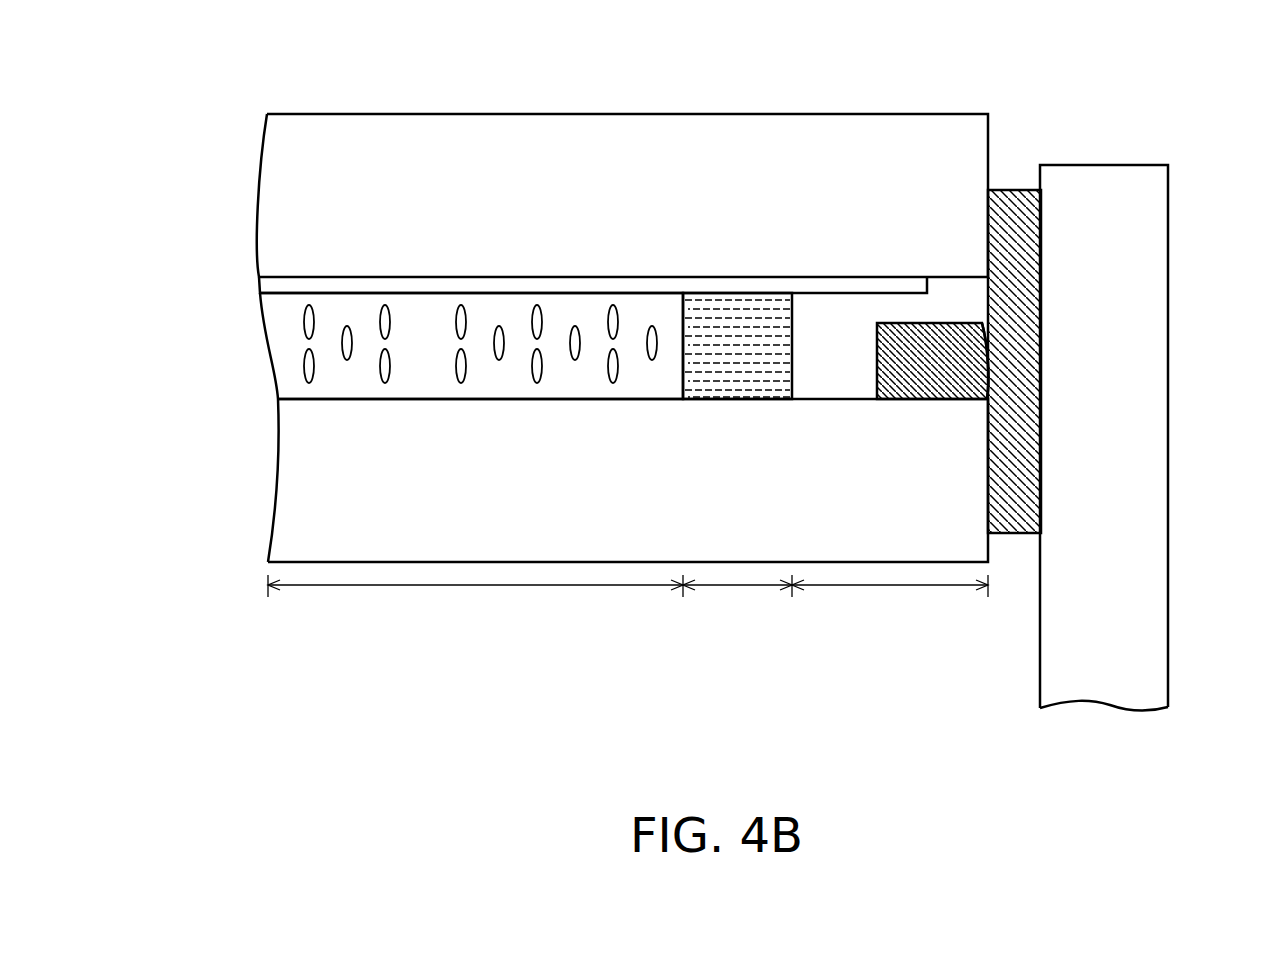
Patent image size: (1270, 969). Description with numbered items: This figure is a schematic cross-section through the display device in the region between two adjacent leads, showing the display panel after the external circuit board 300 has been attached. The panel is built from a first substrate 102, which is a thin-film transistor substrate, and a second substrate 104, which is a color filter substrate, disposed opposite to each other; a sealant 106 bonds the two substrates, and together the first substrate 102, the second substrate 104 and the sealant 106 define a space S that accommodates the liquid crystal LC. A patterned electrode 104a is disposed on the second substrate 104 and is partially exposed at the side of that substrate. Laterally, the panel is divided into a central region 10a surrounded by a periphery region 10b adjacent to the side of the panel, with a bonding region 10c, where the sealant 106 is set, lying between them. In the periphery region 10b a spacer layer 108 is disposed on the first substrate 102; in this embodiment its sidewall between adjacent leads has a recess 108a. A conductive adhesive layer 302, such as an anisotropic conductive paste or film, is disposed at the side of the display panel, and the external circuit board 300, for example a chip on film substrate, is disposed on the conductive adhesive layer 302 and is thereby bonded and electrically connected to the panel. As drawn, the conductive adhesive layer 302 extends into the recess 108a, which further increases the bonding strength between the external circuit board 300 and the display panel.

The second substrate 104 is at (268, 197).
The patterned electrode 104a is at (266, 285).
The liquid crystal LC is at (305, 366).
The space S is at (435, 361).
The first substrate 102 is at (290, 482).
The sealant 106 is at (741, 308).
The spacer layer 108 is at (948, 358).
The recess 108a is at (985, 358).
The conductive adhesive layer 302 is at (1030, 530).
The external circuit board 300 is at (1124, 671).
The central region 10a is at (475, 600).
The periphery region 10b is at (890, 600).
The bonding region 10c is at (737, 600).